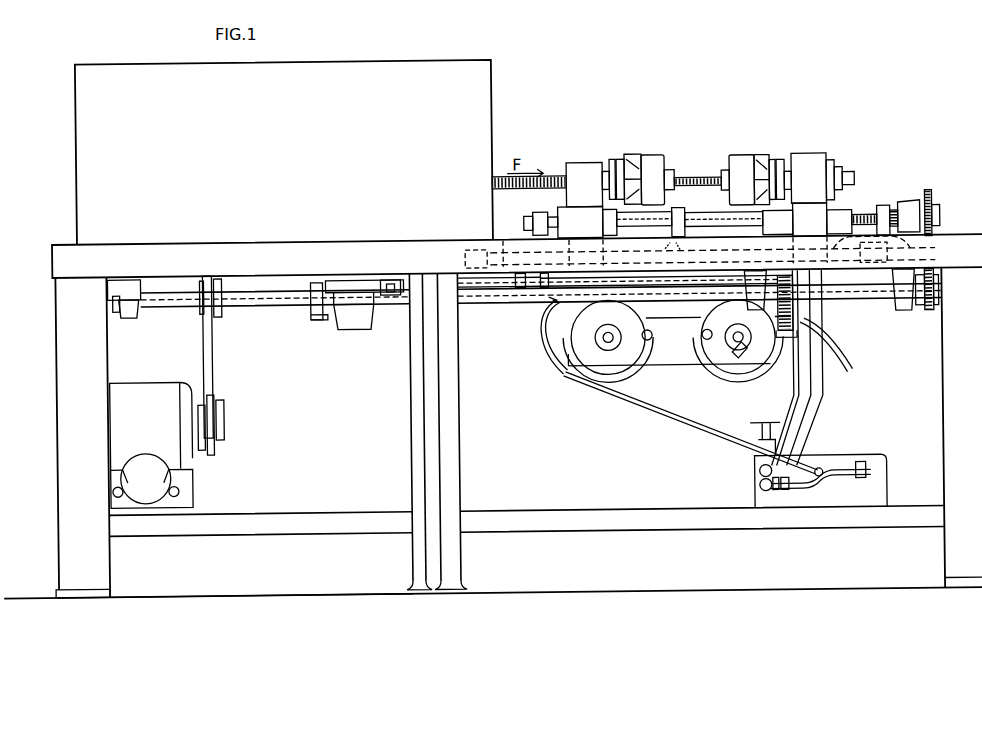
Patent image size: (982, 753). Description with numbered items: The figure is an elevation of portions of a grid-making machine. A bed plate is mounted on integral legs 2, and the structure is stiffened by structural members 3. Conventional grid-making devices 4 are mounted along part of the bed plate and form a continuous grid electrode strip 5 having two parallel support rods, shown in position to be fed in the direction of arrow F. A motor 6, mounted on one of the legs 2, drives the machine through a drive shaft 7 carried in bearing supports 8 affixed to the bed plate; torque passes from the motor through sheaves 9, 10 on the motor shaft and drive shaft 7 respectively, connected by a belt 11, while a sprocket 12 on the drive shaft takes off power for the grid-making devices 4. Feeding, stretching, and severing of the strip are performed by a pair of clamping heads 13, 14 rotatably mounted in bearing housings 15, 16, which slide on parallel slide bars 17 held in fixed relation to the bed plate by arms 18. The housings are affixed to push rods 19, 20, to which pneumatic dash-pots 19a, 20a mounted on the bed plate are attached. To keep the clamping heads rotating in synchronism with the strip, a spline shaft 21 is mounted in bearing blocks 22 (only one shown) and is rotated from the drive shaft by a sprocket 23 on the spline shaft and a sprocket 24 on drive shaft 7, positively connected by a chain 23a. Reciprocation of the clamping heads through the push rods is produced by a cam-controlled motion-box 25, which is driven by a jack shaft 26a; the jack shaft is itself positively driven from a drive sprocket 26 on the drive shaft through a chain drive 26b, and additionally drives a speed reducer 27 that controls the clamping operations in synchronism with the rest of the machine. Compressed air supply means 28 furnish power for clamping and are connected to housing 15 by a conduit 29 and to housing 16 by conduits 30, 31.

The legs 2 is at (55, 358).
The structural members 3 is at (218, 516).
The grid-making devices 4 is at (330, 125).
The grid electrode strip 5 is at (552, 182).
The motor 6 is at (138, 384).
The drive shaft 7 is at (266, 308).
The bearing supports 8 is at (129, 319).
The sheave 9 is at (222, 420).
The sheave 10 is at (217, 319).
The belt 11 is at (211, 367).
The sprocket 12 is at (314, 323).
The clamping head 13 is at (650, 162).
The clamping head 14 is at (742, 163).
The bearing housing 15 is at (582, 169).
The bearing housing 16 is at (806, 162).
The slide bars 17 is at (864, 224).
The arms 18 is at (540, 218).
The push rod 19 is at (503, 246).
The pneumatic dash-pot 19a is at (465, 263).
The push rod 20 is at (878, 247).
The pneumatic dash-pot 20a is at (887, 266).
The spline shaft 21 is at (895, 220).
The bearing block 22 is at (910, 211).
The sprocket 23 is at (928, 200).
The chain 23a is at (936, 215).
The sprocket 24 is at (932, 320).
The motion-box 25 is at (683, 362).
The drive sprocket 26 is at (792, 316).
The jack shaft 26a is at (486, 296).
The chain drive 26b is at (792, 325).
The speed reducer 27 is at (354, 333).
The compressed air supply means 28 is at (734, 498).
The conduit 29 is at (660, 418).
The conduit 30 is at (793, 398).
The conduit 31 is at (821, 399).